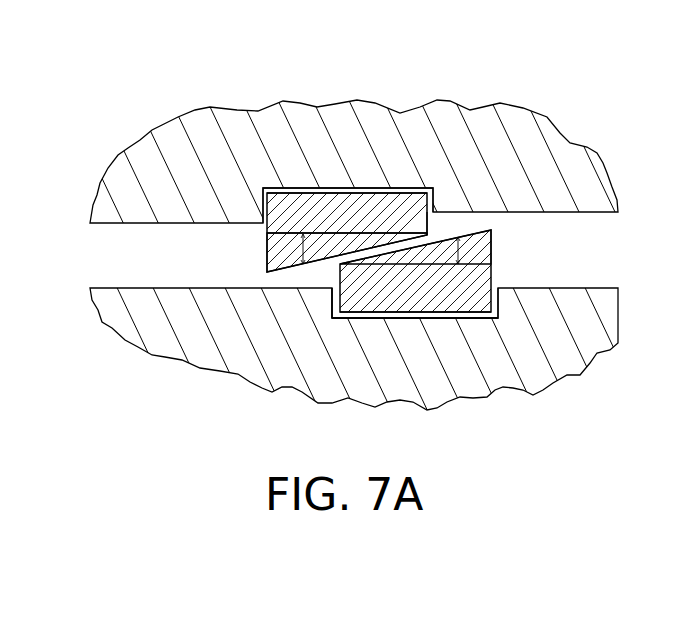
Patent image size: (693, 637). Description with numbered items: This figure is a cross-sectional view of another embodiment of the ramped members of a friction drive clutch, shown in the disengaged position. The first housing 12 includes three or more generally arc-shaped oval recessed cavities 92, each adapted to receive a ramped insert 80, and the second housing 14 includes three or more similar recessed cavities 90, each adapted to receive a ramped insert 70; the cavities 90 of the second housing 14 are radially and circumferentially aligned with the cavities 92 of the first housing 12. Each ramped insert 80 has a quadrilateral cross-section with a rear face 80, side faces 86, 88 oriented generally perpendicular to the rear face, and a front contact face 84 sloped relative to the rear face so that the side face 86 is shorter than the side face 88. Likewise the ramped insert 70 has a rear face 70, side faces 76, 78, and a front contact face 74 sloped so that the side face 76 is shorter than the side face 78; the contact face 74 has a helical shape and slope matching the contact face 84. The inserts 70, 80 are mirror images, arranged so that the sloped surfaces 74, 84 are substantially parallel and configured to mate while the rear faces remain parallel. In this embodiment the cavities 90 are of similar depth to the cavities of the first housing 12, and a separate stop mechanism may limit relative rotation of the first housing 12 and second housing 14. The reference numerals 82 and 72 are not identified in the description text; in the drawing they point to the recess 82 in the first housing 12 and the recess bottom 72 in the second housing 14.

The first housing 12 is at (510, 140).
The second housing 14 is at (562, 360).
The ramped insert 70 is at (491, 263).
The pocket bottom surface 72 is at (404, 316).
The front contact face 74 is at (480, 231).
The side face 76 is at (332, 288).
The side face 78 is at (493, 279).
The ramped insert 80 is at (384, 206).
The first pocket 82 is at (310, 190).
The front contact face 84 is at (303, 265).
The side face 86 is at (427, 213).
The side face 88 is at (267, 238).
The recessed cavity 90 is at (468, 316).
The recessed cavity 92 is at (382, 207).